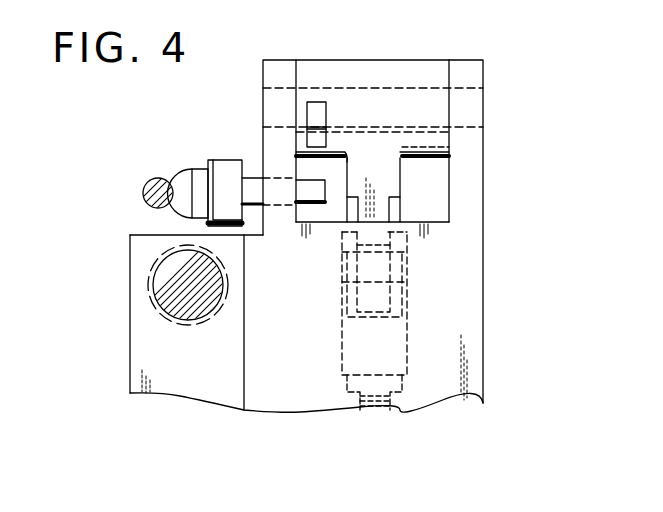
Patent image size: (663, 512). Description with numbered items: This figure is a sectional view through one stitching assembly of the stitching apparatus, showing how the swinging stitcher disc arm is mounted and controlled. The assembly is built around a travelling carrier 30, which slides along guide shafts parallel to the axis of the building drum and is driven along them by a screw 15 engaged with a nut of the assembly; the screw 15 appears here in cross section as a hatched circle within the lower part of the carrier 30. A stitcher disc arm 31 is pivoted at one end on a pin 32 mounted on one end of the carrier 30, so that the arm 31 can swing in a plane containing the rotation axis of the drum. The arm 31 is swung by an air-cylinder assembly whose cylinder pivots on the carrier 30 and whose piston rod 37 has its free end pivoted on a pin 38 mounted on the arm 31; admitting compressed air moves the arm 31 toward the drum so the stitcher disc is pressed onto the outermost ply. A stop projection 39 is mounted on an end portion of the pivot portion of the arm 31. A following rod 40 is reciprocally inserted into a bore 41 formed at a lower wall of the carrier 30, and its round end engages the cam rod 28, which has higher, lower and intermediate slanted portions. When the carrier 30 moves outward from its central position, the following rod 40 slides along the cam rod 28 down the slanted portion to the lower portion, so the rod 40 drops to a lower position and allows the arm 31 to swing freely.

The screw 15 is at (188, 321).
The cam rod 28 is at (148, 180).
The travelling carrier 30 is at (473, 320).
The stitcher disc arm 31 is at (449, 147).
The pin 32 is at (413, 90).
The piston rod 37 is at (392, 403).
The pin 38 is at (398, 264).
The stop projection 39 is at (326, 108).
The following rod 40 is at (251, 177).
The bore 41 is at (280, 196).